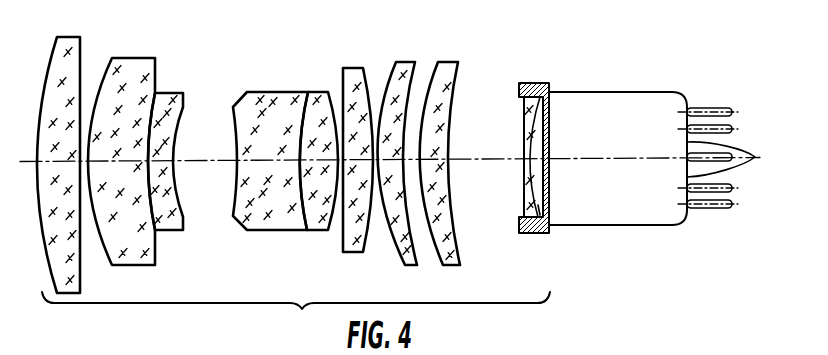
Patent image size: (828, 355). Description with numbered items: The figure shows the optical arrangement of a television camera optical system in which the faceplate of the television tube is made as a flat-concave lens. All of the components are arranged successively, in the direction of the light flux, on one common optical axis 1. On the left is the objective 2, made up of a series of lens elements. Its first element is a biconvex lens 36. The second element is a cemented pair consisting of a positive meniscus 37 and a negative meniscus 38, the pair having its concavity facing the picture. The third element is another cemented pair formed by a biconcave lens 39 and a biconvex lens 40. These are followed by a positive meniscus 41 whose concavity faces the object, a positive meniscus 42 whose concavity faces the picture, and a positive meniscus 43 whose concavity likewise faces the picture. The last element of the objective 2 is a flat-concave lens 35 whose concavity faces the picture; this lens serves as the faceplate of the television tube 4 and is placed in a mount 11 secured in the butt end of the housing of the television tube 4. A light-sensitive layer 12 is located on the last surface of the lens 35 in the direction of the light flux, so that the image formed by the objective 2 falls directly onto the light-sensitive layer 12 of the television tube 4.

The optical axis 1 is at (487, 162).
The objective 2 is at (296, 318).
The television tube 4 is at (602, 98).
The mount 11 is at (523, 85).
The light-sensitive layer 12 is at (543, 204).
The flat-concave lens 35 is at (537, 100).
The biconvex lens 36 is at (70, 48).
The positive meniscus 37 is at (137, 68).
The negative meniscus 38 is at (177, 93).
The biconcave lens 39 is at (260, 100).
The biconvex lens 40 is at (320, 100).
The positive meniscus 41 is at (353, 75).
The positive meniscus 42 is at (405, 67).
The positive meniscus 43 is at (450, 67).